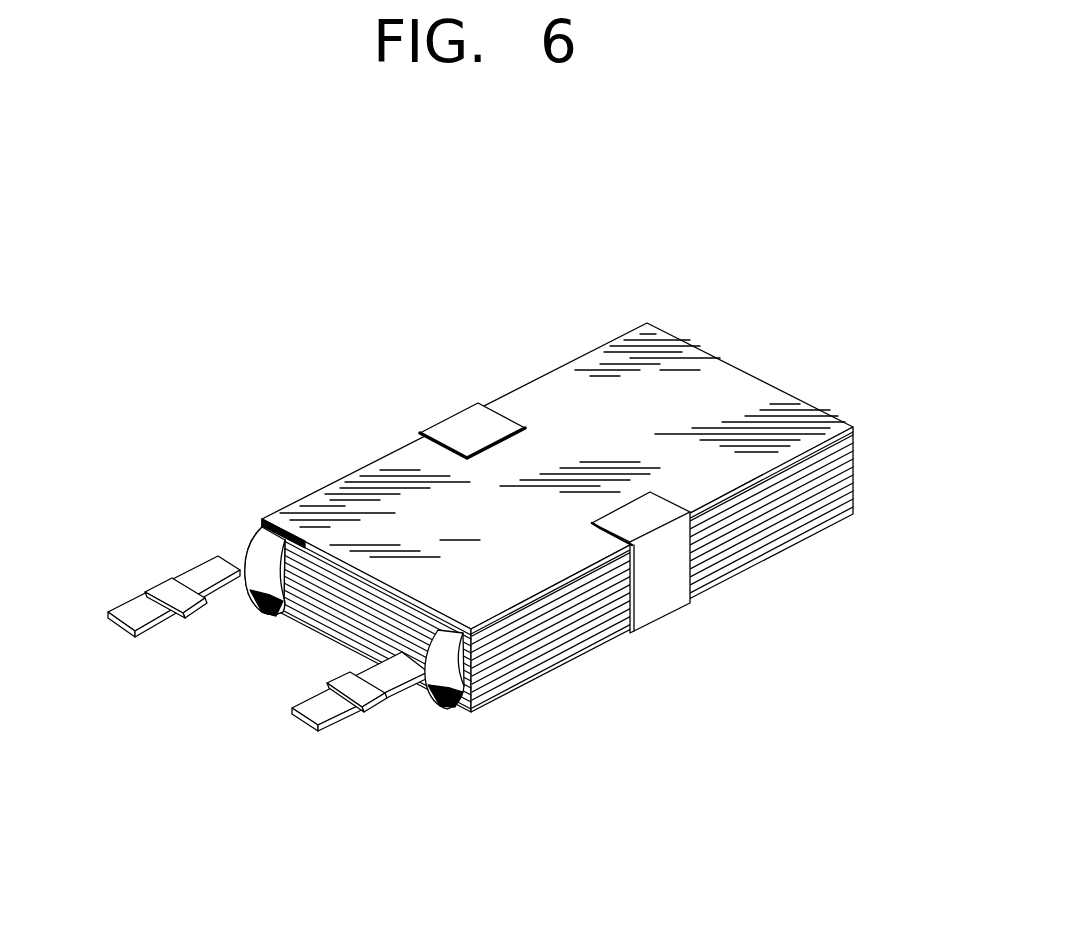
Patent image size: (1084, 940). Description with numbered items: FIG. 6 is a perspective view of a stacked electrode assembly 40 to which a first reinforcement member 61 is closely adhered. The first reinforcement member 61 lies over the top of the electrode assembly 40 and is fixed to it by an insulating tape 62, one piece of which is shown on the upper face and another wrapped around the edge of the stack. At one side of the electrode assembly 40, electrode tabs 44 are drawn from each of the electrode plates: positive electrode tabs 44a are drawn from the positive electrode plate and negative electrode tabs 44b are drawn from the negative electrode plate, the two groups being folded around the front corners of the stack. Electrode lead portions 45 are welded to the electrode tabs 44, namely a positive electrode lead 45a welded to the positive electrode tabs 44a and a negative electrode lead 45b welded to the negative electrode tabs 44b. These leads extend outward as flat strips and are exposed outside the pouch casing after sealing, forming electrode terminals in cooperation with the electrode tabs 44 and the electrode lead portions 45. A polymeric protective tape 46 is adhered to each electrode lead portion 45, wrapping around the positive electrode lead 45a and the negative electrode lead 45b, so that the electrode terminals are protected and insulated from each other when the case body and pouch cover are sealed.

The stacked electrode assembly 40 is at (855, 479).
The electrode tabs 44 is at (252, 413).
The positive electrode tabs 44a is at (260, 550).
The negative electrode tabs 44b is at (440, 633).
The electrode lead portions 45 is at (98, 732).
The positive electrode lead 45a is at (125, 630).
The negative electrode lead 45b is at (293, 715).
The polymeric protective tape 46 is at (172, 586).
The first reinforcement member 61 is at (740, 387).
The insulating tape 62 is at (461, 432).